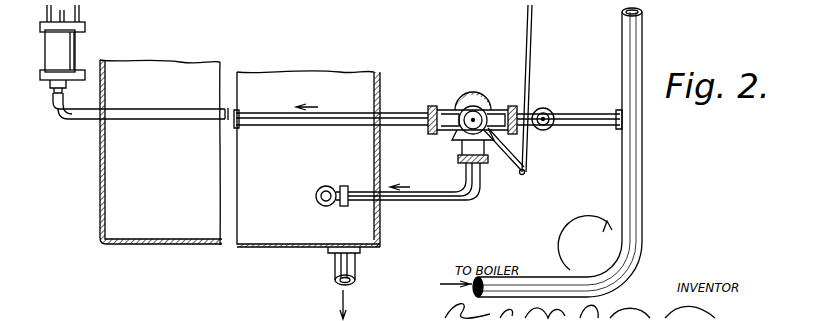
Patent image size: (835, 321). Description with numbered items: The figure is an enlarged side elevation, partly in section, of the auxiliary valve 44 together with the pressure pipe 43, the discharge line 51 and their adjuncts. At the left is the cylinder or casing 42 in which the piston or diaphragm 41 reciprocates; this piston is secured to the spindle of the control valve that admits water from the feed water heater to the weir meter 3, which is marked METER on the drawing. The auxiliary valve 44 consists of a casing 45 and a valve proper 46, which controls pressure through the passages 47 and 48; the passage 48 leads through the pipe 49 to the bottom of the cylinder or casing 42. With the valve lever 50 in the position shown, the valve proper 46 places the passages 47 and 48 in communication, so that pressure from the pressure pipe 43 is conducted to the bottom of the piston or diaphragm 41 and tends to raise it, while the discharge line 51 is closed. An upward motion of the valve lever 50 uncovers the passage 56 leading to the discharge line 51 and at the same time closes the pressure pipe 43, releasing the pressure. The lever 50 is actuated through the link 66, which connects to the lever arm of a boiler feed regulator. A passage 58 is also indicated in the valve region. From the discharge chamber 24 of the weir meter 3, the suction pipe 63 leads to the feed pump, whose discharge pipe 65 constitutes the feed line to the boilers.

The weir meter 3 is at (308, 151).
The discharge chamber 24 is at (284, 168).
The piston or diaphragm 41 is at (56, 38).
The cylinder or casing 42 is at (79, 46).
The pressure pipe 43 is at (553, 114).
The auxiliary valve 44 is at (466, 101).
The casing 45 is at (482, 100).
The valve proper 46 is at (456, 110).
The passage 47 is at (495, 111).
The passage 48 is at (457, 129).
The pipe 49 is at (405, 112).
The valve lever 50 is at (519, 173).
The discharge line 51 is at (446, 200).
The passage 56 is at (465, 150).
The valve passage 58 is at (432, 133).
The suction pipe 63 is at (335, 262).
The discharge pipe 65 is at (642, 211).
The link 66 is at (530, 66).
The meter METER is at (161, 152).